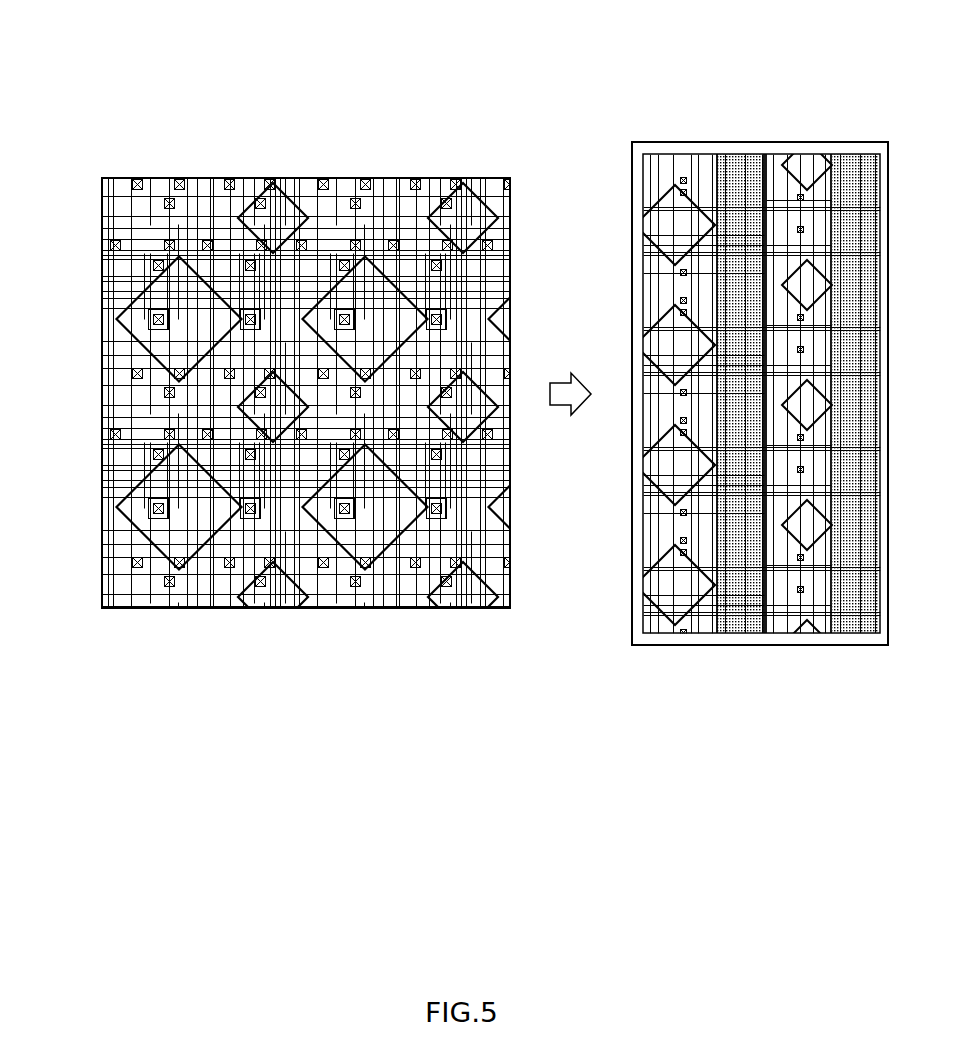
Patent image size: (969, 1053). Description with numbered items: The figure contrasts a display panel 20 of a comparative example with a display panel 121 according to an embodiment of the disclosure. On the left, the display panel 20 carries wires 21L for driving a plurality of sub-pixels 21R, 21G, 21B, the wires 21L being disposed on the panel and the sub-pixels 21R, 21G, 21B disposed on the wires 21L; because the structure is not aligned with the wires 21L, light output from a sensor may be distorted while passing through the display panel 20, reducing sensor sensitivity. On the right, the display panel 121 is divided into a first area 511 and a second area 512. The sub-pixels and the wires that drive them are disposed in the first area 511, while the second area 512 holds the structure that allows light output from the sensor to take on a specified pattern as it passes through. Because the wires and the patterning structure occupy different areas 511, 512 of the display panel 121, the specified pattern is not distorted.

The display panel 20 is at (377, 127).
The wires 21L is at (110, 213).
The sub-pixel 21R is at (120, 307).
The sub-pixel 21B is at (120, 494).
The sub-pixel 21G is at (284, 192).
The display panel 121 is at (790, 86).
The first area 511 is at (795, 142).
The second area 512 is at (855, 637).